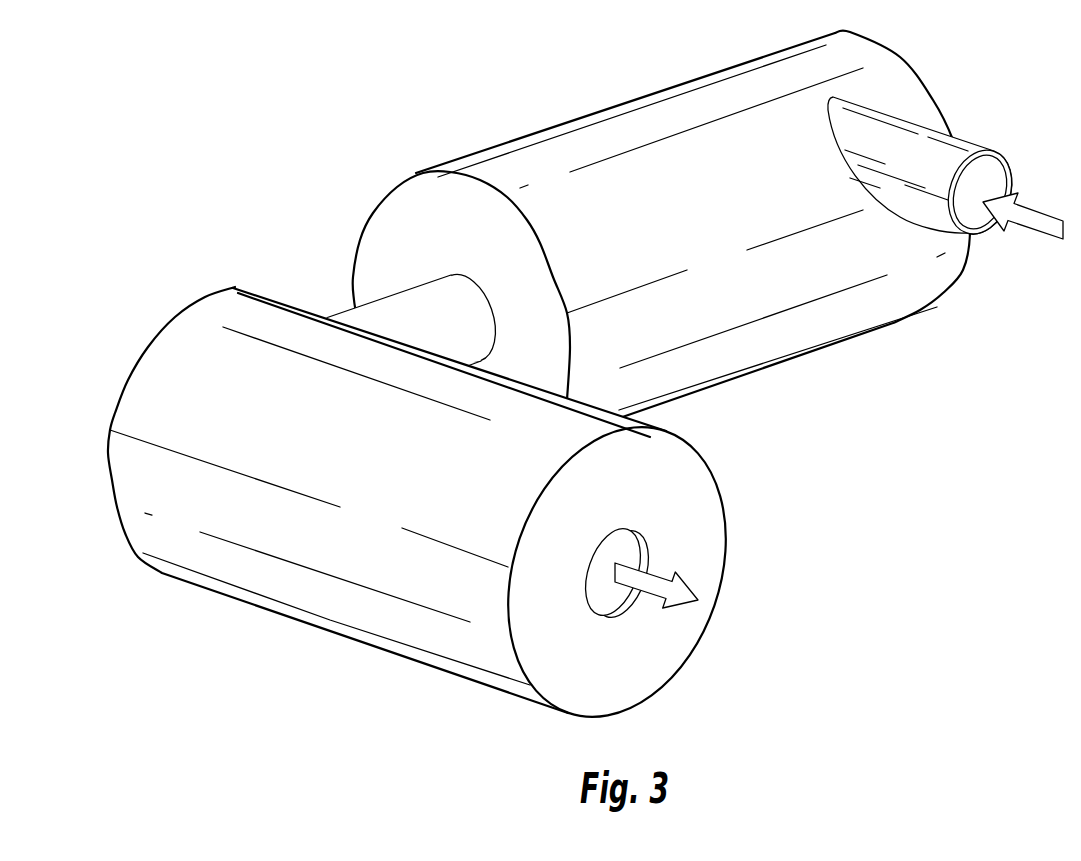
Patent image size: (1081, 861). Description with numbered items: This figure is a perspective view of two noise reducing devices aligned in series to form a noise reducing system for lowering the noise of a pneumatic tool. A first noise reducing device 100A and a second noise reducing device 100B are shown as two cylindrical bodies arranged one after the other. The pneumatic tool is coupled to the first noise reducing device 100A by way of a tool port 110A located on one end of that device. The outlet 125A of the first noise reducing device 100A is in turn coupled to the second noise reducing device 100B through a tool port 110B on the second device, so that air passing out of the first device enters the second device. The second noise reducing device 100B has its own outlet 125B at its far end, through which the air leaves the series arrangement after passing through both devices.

The first noise reducing device 100A is at (605, 77).
The second noise reducing device 100B is at (275, 628).
The tool port 110A is at (923, 127).
The tool port 110B is at (387, 298).
The outlet 125A is at (457, 268).
The outlet 125B is at (603, 552).